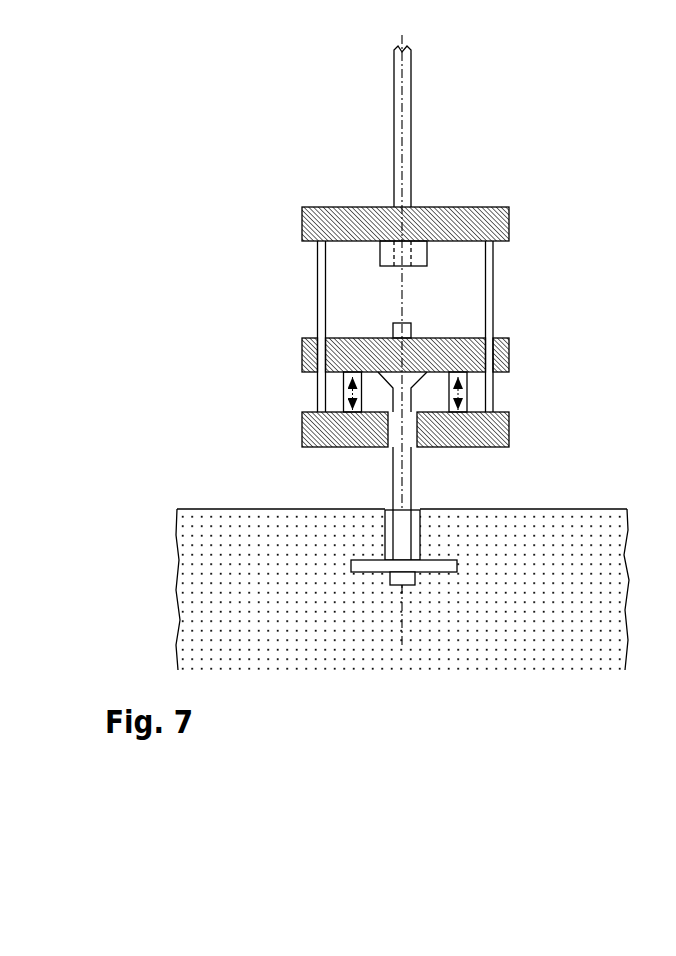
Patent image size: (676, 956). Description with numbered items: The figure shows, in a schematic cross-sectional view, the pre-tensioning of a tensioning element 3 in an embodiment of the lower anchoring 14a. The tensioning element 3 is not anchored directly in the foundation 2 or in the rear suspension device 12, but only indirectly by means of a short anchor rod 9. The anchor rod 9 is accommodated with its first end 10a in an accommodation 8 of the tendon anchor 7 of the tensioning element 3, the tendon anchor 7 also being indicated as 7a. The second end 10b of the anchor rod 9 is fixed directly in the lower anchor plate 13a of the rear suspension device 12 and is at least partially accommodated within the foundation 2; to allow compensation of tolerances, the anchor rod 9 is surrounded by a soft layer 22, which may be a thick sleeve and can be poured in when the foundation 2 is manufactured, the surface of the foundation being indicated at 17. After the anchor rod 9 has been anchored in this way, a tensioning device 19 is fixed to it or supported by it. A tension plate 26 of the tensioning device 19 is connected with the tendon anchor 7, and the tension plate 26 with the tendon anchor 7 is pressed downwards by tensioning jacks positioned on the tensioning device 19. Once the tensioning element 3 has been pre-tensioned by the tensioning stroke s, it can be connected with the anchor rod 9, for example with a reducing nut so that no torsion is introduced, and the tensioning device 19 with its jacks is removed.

The foundation 2 is at (565, 527).
The tensioning element 3 is at (411, 158).
The tendon anchor 7 is at (430, 268).
The coupling part 7a is at (329, 242).
The accommodation 8 is at (393, 253).
The anchor rod 9 is at (397, 502).
The first end 10a is at (392, 336).
The second end 10b is at (397, 543).
The rear suspension device 12 is at (362, 577).
The lower anchor plate 13a is at (351, 566).
The lower anchoring 14a is at (413, 600).
The ground surface 17 is at (527, 508).
The tensioning device 19 is at (487, 232).
The soft layer 22 is at (386, 529).
The tension plate 26 is at (318, 220).
The tensioning stroke s is at (172, 233).